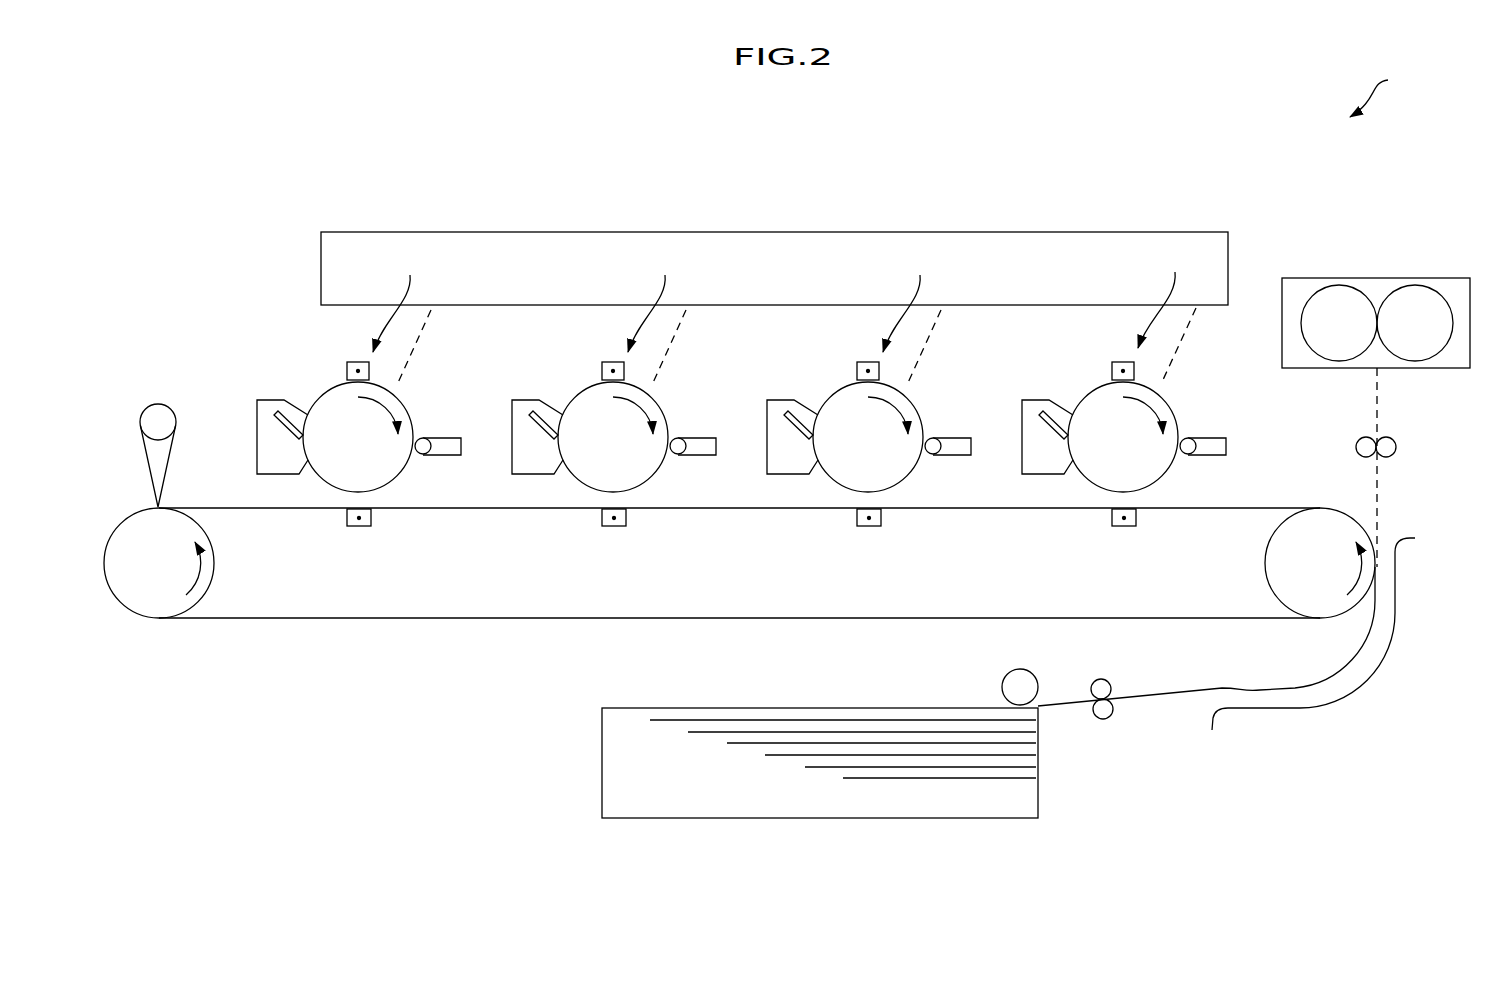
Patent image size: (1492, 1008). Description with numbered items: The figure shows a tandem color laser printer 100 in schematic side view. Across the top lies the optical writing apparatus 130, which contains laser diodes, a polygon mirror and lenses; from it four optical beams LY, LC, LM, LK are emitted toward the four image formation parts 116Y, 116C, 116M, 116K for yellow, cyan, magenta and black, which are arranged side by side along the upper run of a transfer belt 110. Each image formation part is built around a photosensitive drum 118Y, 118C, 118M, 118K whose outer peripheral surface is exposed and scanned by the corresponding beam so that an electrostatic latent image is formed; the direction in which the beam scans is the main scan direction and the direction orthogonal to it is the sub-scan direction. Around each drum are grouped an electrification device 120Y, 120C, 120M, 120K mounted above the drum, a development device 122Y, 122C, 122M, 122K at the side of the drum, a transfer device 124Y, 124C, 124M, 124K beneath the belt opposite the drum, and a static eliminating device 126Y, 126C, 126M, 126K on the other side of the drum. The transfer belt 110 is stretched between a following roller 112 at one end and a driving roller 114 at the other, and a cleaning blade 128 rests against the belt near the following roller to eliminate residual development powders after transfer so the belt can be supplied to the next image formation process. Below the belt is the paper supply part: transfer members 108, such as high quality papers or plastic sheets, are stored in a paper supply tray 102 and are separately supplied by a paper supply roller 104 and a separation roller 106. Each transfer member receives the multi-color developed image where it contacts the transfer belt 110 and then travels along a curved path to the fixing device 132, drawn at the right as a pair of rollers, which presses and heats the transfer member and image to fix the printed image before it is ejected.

The laser printer 100 is at (1436, 89).
The paper supply tray 102 is at (822, 820).
The paper supply roller 104 is at (1003, 683).
The separation roller 106 is at (1101, 718).
The transfer member 108 is at (857, 705).
The transfer belt 110 is at (652, 620).
The following roller 112 is at (157, 612).
The driving roller 114 is at (1295, 593).
The image formation part 116Y is at (408, 300).
The image formation part 116C is at (663, 300).
The image formation part 116M is at (920, 300).
The image formation part 116K is at (1174, 296).
The photosensitive drum 118Y is at (382, 470).
The photosensitive drum 118C is at (637, 470).
The photosensitive drum 118M is at (892, 470).
The photosensitive drum 118K is at (1147, 470).
The electrification device 120Y is at (358, 362).
The electrification device 120C is at (613, 362).
The electrification device 120M is at (868, 362).
The electrification device 120K is at (1123, 362).
The development device 122Y is at (442, 452).
The development device 122C is at (697, 452).
The development device 122M is at (952, 452).
The development device 122K is at (1207, 452).
The transfer device 124Y is at (360, 527).
The transfer device 124C is at (615, 527).
The transfer device 124M is at (870, 527).
The transfer device 124K is at (1125, 527).
The static eliminating device 126Y is at (272, 402).
The static eliminating device 126C is at (527, 402).
The static eliminating device 126M is at (782, 402).
The static eliminating device 126K is at (1037, 402).
The cleaning blade 128 is at (158, 403).
The optical writing apparatus 130 is at (783, 232).
The fixing device 132 is at (1377, 278).
The optical beam LY is at (427, 347).
The optical beam LC is at (684, 347).
The optical beam LM is at (941, 347).
The optical beam LK is at (1194, 345).